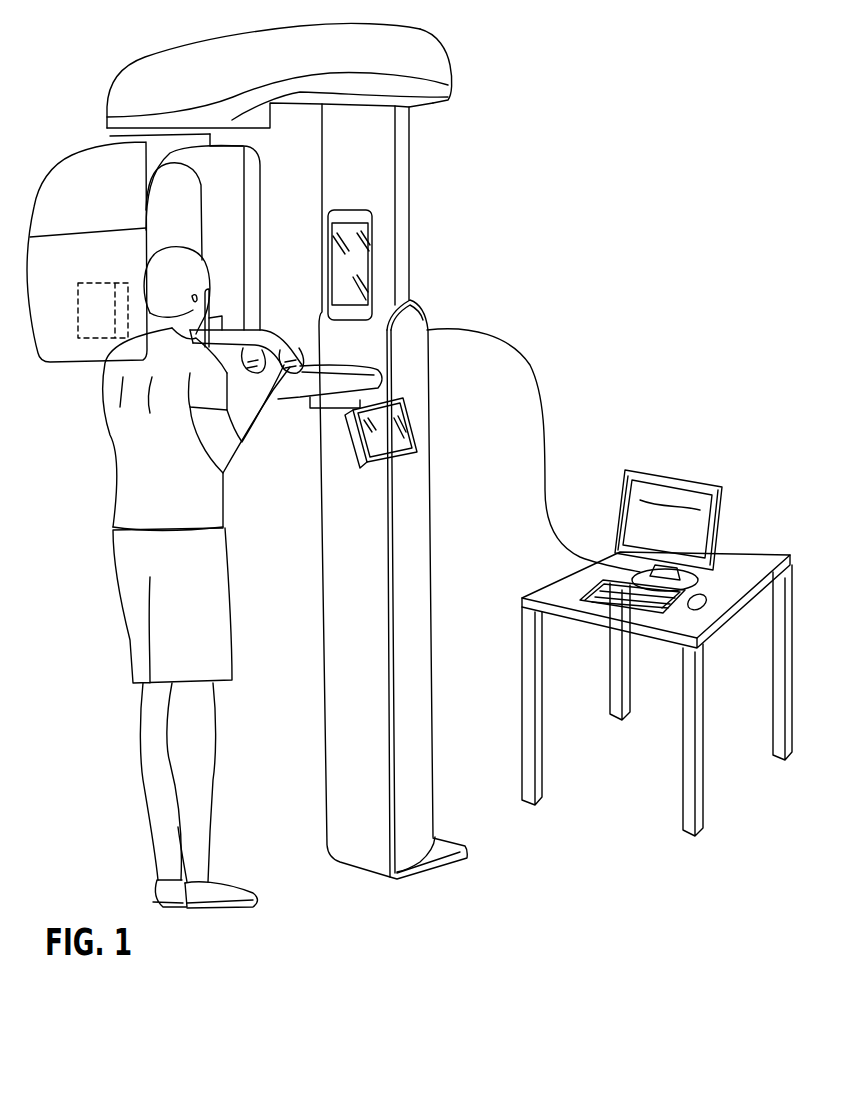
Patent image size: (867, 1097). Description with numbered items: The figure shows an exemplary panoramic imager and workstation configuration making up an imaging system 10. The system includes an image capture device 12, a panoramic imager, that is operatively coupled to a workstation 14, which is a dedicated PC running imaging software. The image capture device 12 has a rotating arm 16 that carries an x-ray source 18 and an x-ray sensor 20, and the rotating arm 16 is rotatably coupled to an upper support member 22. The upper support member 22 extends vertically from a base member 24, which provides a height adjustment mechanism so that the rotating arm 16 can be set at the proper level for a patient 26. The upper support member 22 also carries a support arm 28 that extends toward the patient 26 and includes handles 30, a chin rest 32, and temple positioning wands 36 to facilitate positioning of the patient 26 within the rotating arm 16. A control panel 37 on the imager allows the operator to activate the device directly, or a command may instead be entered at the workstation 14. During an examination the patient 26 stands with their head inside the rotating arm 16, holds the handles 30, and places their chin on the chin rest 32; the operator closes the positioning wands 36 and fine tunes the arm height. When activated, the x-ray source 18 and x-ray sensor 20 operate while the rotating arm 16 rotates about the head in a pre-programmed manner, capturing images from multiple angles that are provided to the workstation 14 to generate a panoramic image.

The imaging system 10 is at (613, 146).
The image capture device 12 is at (168, 58).
The workstation 14 is at (666, 476).
The rotating arm 16 is at (45, 170).
The x-ray source 18 is at (80, 322).
The x-ray sensor 20 is at (262, 235).
The upper support member 22 is at (450, 68).
The base member 24 is at (433, 580).
The patient 26 is at (180, 248).
The support arm 28 is at (283, 398).
The handles 30 is at (272, 341).
The chin rest 32 is at (208, 318).
The temple positioning wands 36 is at (210, 291).
The control panel 37 is at (416, 424).